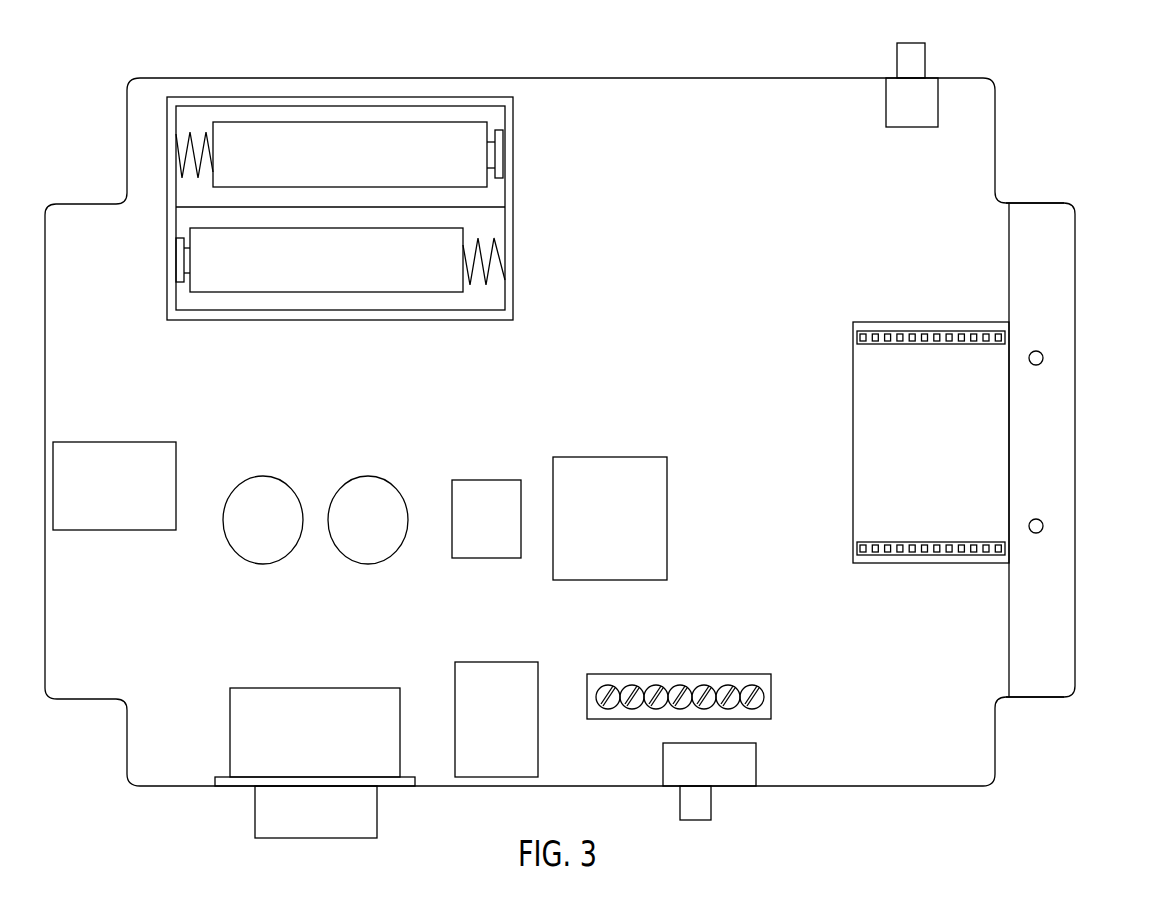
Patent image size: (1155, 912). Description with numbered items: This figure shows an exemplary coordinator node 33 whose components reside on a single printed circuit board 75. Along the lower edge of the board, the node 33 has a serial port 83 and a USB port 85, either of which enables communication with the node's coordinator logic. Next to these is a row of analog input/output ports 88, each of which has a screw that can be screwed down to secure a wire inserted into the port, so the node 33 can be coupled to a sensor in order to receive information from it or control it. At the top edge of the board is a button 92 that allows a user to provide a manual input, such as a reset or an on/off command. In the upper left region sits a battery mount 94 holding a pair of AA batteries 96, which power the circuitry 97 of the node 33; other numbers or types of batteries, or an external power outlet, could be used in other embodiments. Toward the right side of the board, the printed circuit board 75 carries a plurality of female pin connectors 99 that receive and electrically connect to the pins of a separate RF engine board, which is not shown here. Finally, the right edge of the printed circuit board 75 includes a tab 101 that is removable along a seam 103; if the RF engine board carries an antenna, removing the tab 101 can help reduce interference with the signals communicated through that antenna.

The coordinator node 33 is at (1076, 91).
The printed circuit board 75 is at (722, 78).
The RS-232 port 83 is at (372, 820).
The USB port 85 is at (510, 662).
The analog input/output ports 88 is at (771, 695).
The button 92 is at (925, 50).
The battery mount 94 is at (513, 207).
The AA batteries 96 is at (338, 207).
The circuitry 97 is at (501, 430).
The female pin connectors 99 is at (931, 332).
The tab 101 is at (1034, 204).
The seam 103 is at (1009, 270).